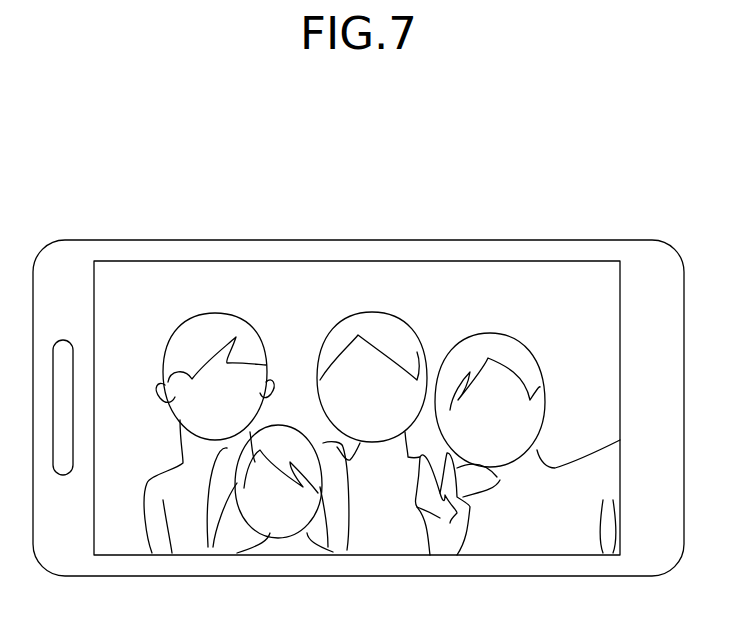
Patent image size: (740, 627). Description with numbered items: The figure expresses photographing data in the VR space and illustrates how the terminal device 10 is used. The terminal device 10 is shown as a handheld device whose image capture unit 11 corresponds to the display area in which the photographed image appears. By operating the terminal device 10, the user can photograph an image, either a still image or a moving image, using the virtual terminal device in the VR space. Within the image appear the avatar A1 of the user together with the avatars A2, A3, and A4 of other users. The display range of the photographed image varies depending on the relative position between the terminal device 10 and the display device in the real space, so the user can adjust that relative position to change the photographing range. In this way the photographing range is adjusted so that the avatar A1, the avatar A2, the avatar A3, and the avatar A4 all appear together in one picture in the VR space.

The terminal device 10 is at (440, 170).
The image capture unit 11 is at (578, 318).
The avatar A1 is at (488, 333).
The avatar A2 is at (362, 310).
The avatar A3 is at (296, 427).
The avatar A4 is at (203, 313).